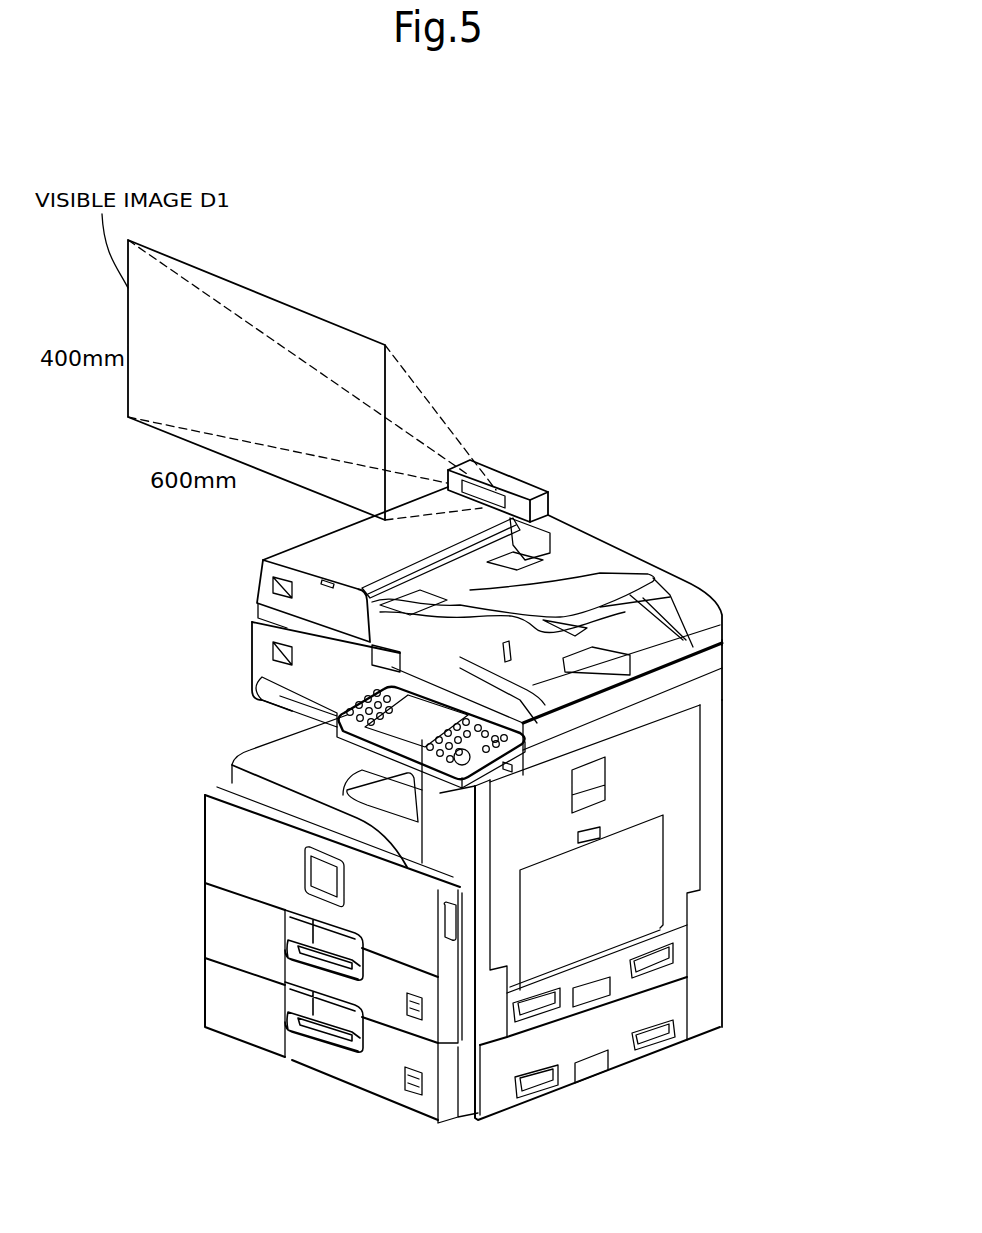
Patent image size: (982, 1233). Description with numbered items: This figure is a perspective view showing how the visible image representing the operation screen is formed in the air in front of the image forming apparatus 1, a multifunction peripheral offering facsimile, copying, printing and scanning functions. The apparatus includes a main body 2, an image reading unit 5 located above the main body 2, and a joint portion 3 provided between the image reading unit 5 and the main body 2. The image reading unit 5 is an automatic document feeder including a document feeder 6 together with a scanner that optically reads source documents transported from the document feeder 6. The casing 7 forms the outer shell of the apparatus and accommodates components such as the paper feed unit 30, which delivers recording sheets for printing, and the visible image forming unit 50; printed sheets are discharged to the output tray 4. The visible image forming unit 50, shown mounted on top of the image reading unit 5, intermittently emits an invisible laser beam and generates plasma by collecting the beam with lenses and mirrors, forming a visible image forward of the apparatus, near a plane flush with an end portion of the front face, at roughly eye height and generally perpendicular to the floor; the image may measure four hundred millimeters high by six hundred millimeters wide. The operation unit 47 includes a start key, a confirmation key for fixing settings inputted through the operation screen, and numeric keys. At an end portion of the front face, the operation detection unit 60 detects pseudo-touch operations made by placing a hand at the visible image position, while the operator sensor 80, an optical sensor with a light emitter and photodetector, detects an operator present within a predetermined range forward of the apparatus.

The image forming apparatus 1 is at (641, 446).
The main body 2 is at (735, 877).
The joint portion 3 is at (458, 842).
The output tray 4 is at (248, 768).
The image reading unit 5 is at (725, 672).
The document feeder 6 is at (617, 532).
The casing 7 is at (685, 888).
The paper feed unit 30 is at (190, 846).
The operation unit 47 is at (332, 725).
The visible image forming unit 50 is at (483, 463).
The operation detection unit 60 is at (270, 580).
The operator sensor 80 is at (273, 650).